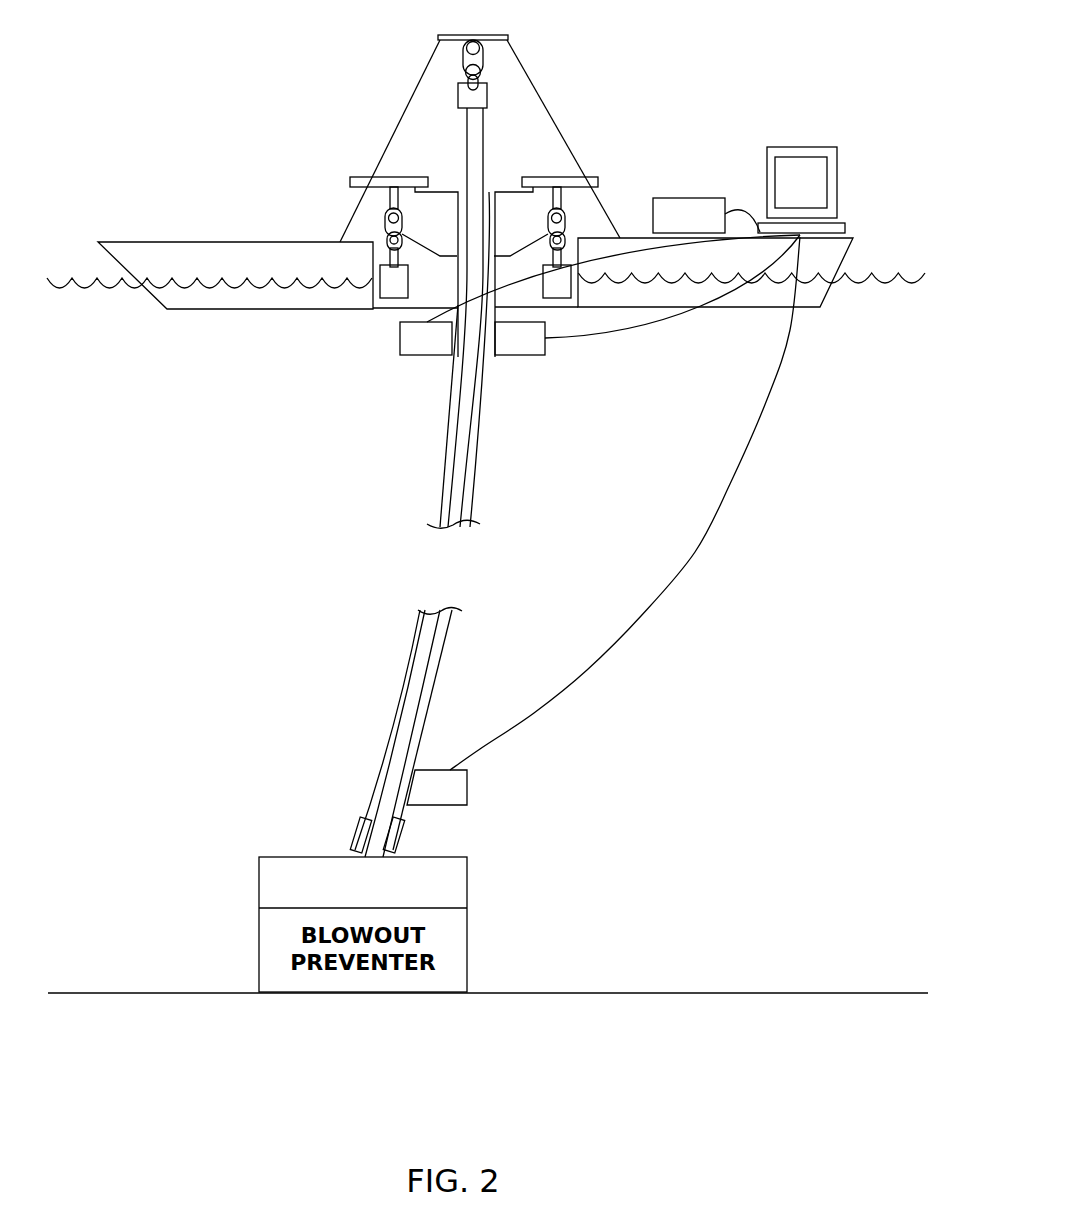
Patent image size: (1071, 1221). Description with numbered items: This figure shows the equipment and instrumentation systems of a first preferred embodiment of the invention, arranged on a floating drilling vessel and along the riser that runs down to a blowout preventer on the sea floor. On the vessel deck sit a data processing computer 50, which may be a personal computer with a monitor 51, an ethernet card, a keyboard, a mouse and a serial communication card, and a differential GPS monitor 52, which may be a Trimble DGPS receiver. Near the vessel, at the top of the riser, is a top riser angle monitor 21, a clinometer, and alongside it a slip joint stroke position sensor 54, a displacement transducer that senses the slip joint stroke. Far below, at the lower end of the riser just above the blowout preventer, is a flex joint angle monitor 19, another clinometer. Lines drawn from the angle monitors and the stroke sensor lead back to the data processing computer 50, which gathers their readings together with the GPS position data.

The flex joint angle monitor 19 is at (467, 788).
The top riser angle monitor 21 is at (548, 352).
The data processing computer 50 is at (872, 188).
The computer 51 is at (825, 147).
The differential GPS monitor 52 is at (667, 198).
The slip joint stroke position sensor 54 is at (400, 350).